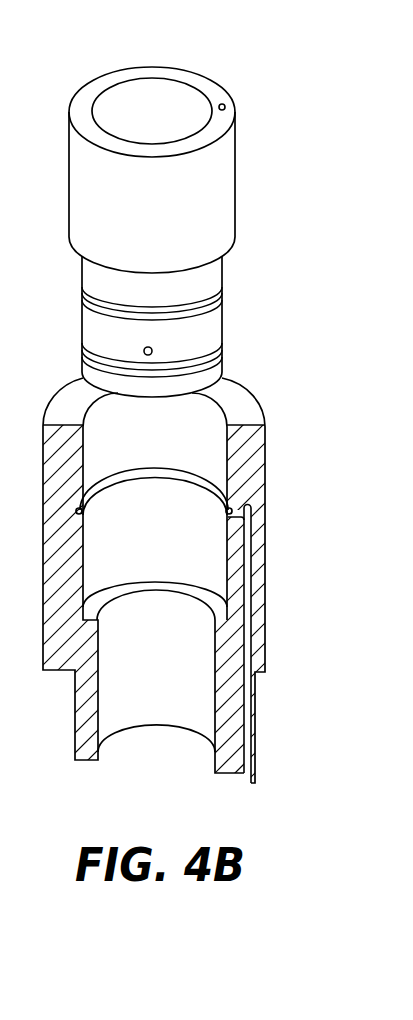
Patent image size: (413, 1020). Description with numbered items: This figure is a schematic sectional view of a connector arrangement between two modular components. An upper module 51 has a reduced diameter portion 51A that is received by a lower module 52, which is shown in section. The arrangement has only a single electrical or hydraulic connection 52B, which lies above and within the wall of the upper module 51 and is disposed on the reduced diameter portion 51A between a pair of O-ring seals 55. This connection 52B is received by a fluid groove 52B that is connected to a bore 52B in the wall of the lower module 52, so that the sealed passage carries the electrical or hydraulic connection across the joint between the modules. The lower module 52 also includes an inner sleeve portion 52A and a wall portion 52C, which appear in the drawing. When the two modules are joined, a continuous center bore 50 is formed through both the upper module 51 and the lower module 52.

The continuous center bore 50 is at (152, 87).
The upper module 51 is at (205, 208).
The reduced diameter portion 51A is at (222, 268).
The O-ring seals 55 is at (215, 297).
The lower module 52 is at (241, 405).
The inner sleeve 52A is at (213, 558).
The electrical or hydraulic connection 52B is at (224, 105).
The housing wall 52C is at (257, 445).